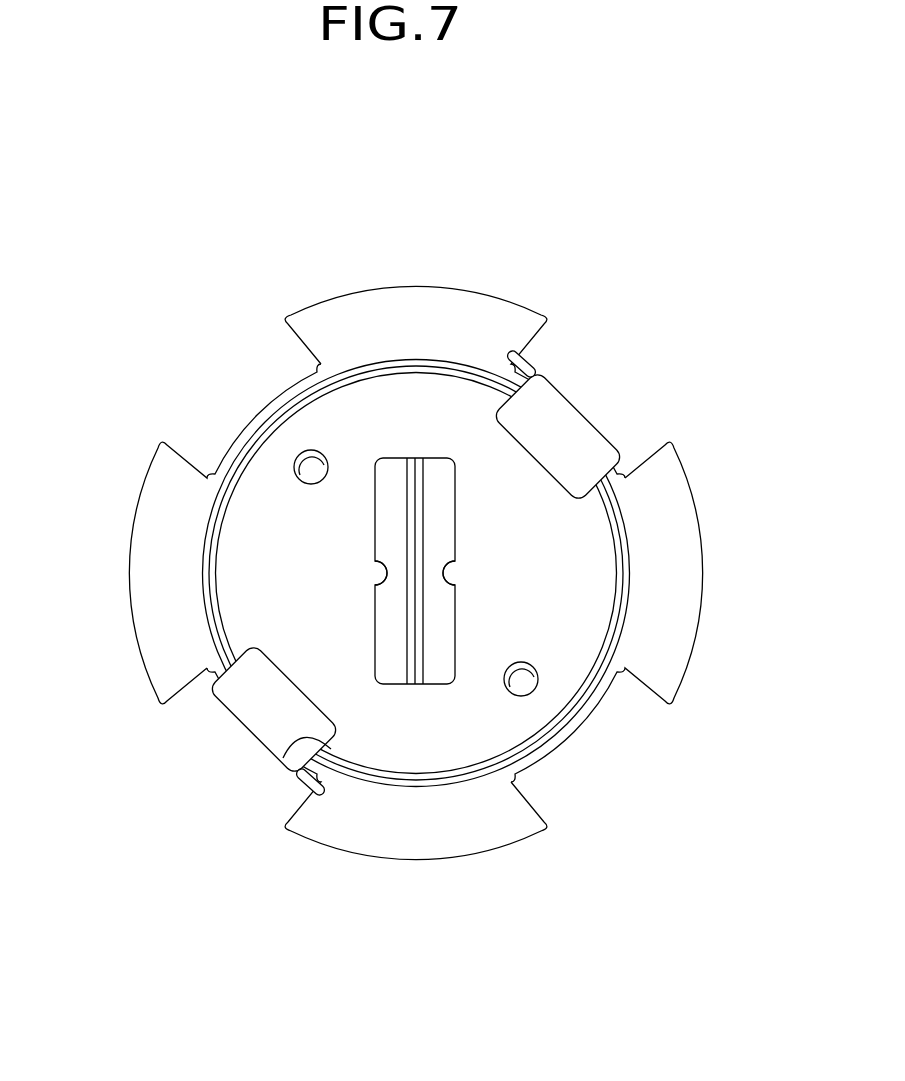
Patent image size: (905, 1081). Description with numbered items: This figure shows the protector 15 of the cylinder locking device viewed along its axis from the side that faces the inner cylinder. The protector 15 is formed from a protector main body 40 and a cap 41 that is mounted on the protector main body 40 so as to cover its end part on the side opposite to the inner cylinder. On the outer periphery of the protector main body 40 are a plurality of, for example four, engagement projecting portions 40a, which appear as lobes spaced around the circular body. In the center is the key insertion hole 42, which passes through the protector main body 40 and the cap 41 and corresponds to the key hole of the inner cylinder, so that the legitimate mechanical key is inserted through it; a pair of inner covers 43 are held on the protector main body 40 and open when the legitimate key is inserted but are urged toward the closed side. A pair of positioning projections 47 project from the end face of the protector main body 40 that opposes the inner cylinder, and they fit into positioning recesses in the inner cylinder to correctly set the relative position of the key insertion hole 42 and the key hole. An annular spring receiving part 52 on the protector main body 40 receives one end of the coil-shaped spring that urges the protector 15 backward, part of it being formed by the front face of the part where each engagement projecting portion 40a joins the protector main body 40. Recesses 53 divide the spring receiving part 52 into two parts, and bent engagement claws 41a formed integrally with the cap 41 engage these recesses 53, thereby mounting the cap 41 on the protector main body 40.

The protector 15 is at (410, 559).
The protector main body 40 is at (410, 559).
The engagement projecting portion 40a is at (455, 302).
The cap 41 is at (427, 570).
The bent engagement claw 41a is at (588, 440).
The key insertion hole 42 is at (420, 571).
The inner cover 43 is at (402, 598).
The positioning projection 47 is at (312, 462).
The spring receiving part 52 is at (368, 360).
The recess 53 is at (530, 395).